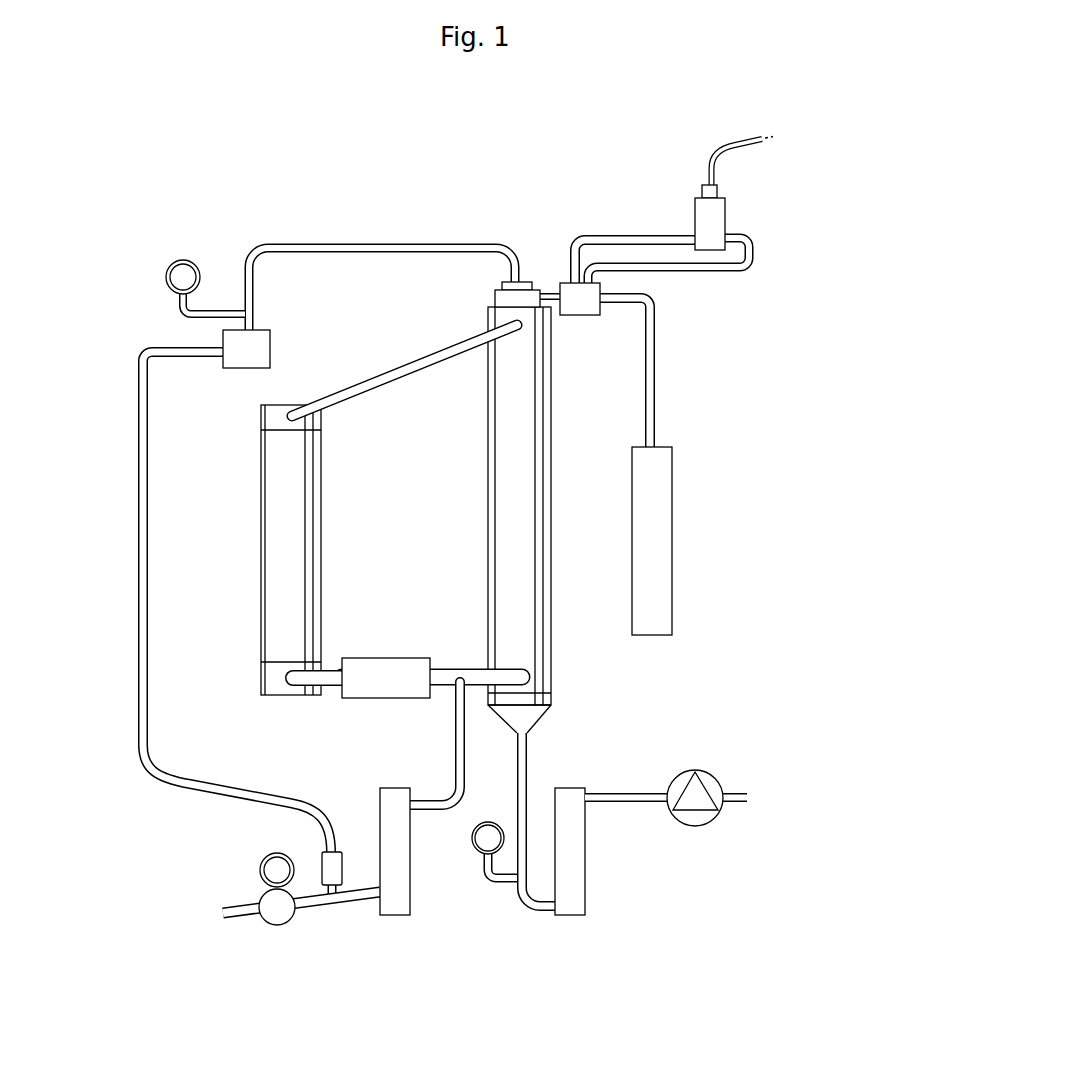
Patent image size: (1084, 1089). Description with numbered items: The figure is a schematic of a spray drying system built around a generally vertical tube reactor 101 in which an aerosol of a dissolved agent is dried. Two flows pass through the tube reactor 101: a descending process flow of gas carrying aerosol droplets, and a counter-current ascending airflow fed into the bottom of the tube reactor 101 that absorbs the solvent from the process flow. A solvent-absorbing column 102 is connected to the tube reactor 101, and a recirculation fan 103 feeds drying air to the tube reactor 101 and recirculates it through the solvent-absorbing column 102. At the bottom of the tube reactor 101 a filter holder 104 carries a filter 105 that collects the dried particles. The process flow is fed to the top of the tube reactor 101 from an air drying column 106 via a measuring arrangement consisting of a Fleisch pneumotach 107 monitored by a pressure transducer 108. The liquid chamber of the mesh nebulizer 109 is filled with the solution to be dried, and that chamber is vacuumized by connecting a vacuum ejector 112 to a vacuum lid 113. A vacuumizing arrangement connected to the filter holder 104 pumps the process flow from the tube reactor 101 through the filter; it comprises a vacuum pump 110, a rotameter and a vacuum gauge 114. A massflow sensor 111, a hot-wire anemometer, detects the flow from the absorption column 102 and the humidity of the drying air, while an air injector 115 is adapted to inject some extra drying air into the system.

The tube reactor 101 is at (497, 473).
The solvent-absorbing column 102 is at (272, 523).
The recirculation fan 103 is at (378, 663).
The filter holder 104 is at (593, 710).
The filter 105 is at (545, 700).
The air drying column 106 is at (665, 502).
The Fleisch pneumotach 107 is at (582, 317).
The pressure transducer 108 is at (718, 210).
The mesh nebulizer 109 is at (502, 298).
The vacuum pump 110 is at (708, 818).
The massflow sensor 111 is at (330, 683).
The vacuum ejector 112 is at (272, 343).
The vacuum lid 113 is at (528, 280).
The vacuum gauge 114 is at (490, 822).
The air injector 115 is at (397, 905).